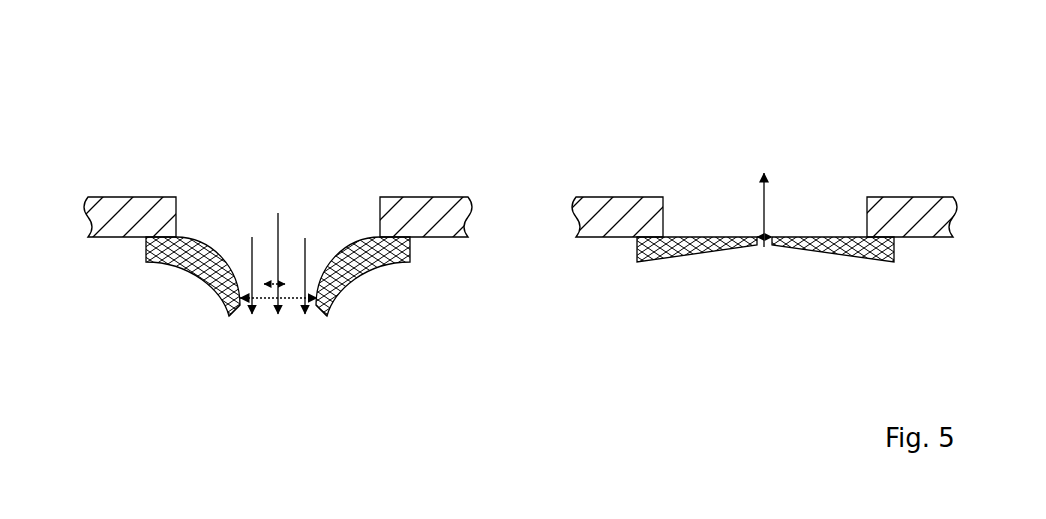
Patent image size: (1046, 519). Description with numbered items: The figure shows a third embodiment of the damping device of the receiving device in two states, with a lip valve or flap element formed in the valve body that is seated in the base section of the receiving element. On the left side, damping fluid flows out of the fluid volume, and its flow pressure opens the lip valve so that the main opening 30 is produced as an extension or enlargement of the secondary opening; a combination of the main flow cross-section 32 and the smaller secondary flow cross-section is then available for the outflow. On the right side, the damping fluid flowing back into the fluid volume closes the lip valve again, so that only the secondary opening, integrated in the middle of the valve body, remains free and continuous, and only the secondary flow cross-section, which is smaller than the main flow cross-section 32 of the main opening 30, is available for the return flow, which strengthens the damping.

The main opening 30 is at (247, 316).
The main flow cross-section 32 is at (290, 300).